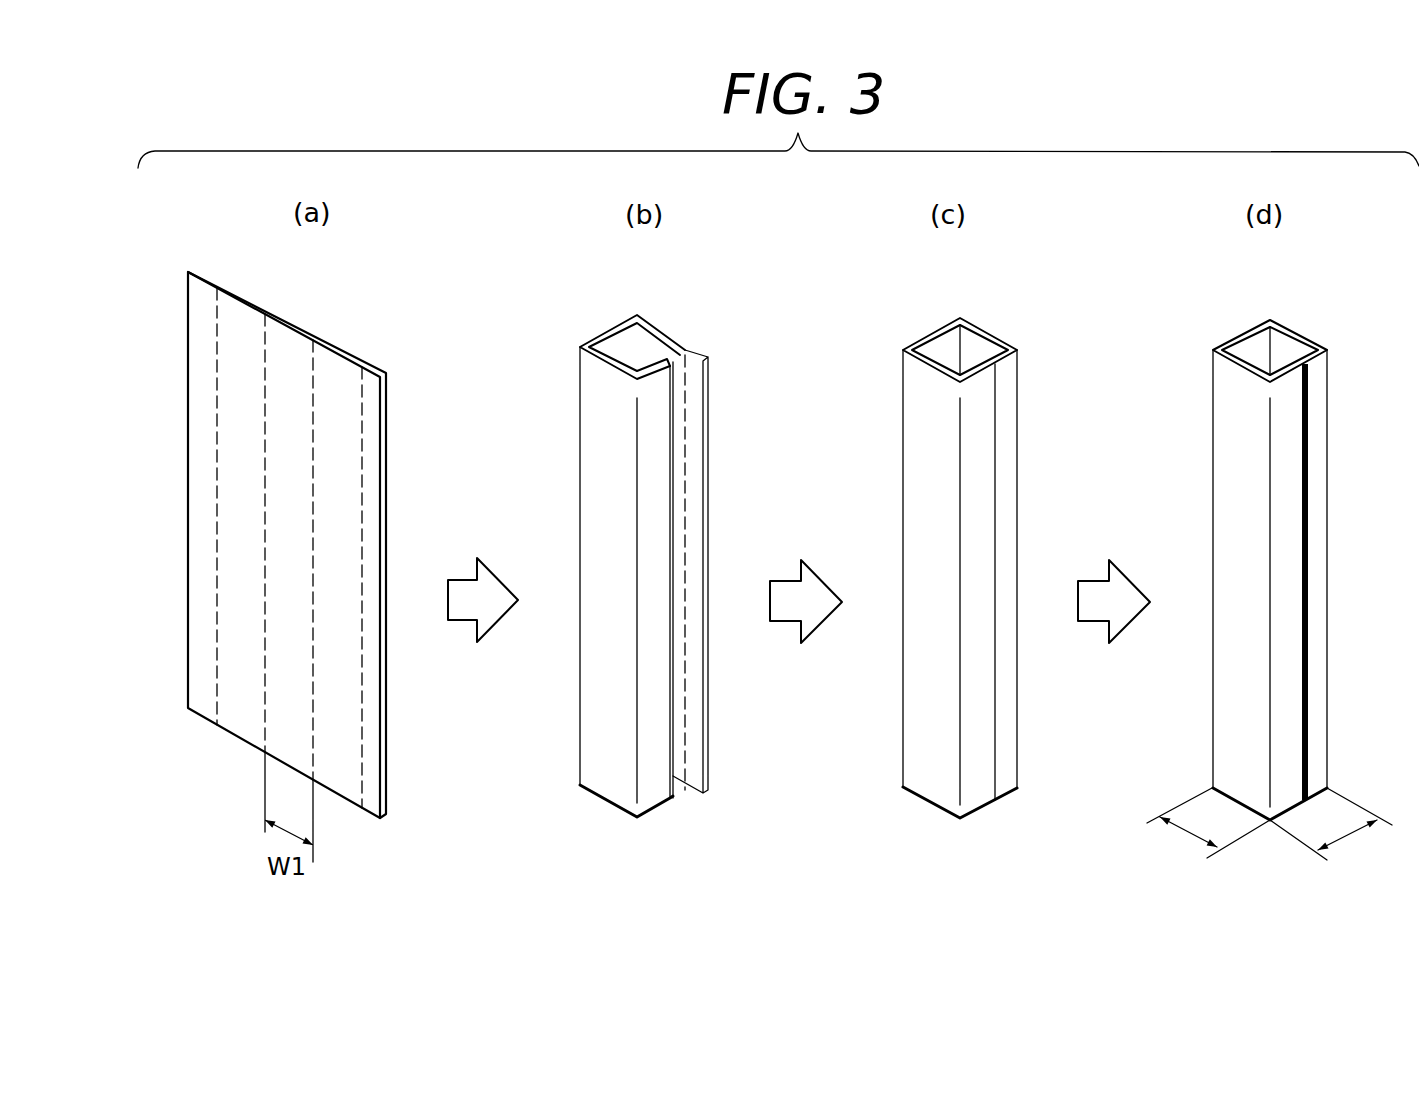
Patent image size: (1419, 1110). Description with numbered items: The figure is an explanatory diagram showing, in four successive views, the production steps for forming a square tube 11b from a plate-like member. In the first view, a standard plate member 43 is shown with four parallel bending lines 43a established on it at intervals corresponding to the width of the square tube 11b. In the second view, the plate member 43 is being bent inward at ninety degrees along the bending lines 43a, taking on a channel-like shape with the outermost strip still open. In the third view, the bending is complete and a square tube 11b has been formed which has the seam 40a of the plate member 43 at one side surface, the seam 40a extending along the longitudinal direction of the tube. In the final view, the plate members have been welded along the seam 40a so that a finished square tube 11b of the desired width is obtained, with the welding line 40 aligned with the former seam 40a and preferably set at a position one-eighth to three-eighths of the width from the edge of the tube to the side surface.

The plate member 43 is at (300, 327).
The bending lines 43a is at (313, 685).
The seam 40a is at (995, 692).
The welding line 40 is at (1308, 750).
The square tube 11b is at (1280, 567).